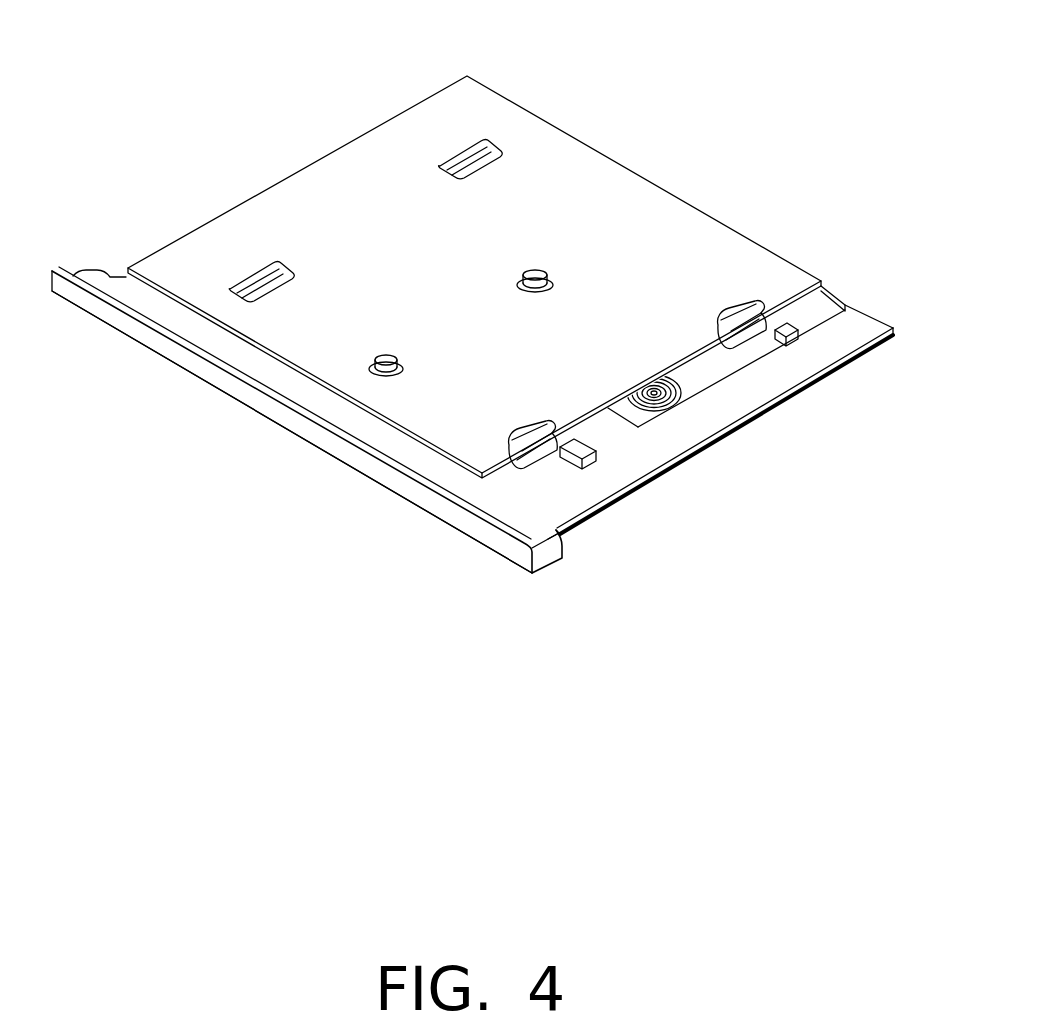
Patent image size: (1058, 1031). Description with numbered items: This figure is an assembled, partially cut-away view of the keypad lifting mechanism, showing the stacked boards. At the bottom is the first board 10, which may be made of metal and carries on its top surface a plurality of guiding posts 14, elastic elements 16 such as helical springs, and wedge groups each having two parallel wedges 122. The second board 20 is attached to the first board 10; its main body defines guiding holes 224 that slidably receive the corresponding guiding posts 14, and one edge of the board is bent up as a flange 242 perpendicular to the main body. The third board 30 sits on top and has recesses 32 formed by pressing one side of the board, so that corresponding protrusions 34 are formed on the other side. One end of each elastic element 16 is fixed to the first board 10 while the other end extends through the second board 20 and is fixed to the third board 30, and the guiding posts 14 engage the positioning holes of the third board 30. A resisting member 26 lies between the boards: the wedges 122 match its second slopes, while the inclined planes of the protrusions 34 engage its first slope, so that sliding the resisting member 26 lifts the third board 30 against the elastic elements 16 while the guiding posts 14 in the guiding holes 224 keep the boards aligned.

The first board 10 is at (877, 350).
The guiding post 14 is at (536, 271).
The elastic element 16 is at (660, 403).
The second board 20 is at (504, 434).
The resisting member 26 is at (820, 302).
The third board 30 is at (476, 315).
The recess 32 is at (482, 150).
The protrusion 34 is at (531, 447).
The wedge 122 is at (782, 337).
The guiding hole 224 is at (384, 373).
The side wall 242 is at (405, 485).